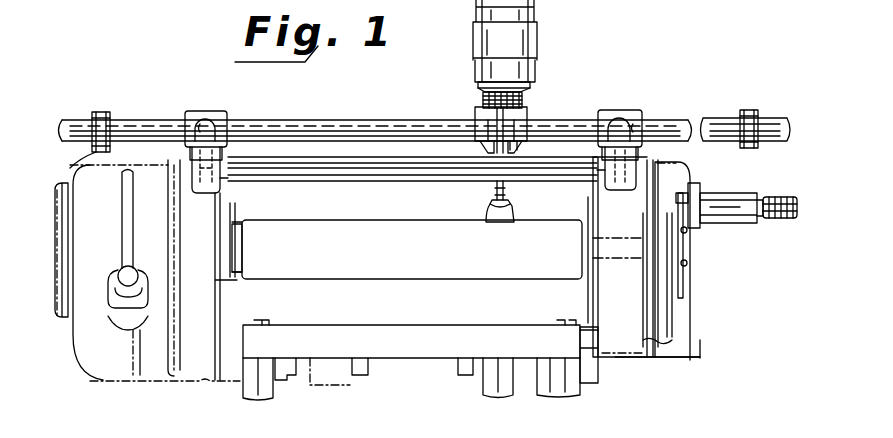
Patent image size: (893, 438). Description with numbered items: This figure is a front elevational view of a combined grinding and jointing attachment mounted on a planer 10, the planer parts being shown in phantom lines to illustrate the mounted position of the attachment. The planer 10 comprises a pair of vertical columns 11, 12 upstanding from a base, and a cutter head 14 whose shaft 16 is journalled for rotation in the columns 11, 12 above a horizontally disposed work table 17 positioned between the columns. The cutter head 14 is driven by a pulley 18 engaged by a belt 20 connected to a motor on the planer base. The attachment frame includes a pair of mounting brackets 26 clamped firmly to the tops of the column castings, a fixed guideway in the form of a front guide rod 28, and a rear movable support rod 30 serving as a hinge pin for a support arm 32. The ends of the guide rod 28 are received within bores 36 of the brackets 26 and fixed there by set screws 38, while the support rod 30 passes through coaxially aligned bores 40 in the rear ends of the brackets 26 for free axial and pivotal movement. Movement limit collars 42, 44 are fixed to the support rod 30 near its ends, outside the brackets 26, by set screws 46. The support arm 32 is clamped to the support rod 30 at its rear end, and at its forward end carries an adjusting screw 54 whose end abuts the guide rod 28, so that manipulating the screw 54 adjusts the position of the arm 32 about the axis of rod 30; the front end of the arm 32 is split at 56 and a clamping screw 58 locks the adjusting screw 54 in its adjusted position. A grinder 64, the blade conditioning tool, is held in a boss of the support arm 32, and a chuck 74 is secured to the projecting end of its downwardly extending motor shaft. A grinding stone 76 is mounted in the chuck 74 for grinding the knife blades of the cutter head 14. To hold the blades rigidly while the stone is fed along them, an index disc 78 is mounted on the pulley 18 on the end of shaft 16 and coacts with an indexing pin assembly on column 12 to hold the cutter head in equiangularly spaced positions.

The planer 10 is at (202, 389).
The vertical column 11 is at (248, 311).
The vertical column 12 is at (574, 302).
The cutter head 14 is at (352, 278).
The shaft 16 is at (612, 238).
The work table 17 is at (447, 320).
The pulley 18 is at (645, 273).
The belt 20 is at (675, 323).
The mounting brackets 26 is at (211, 100).
The guide rod 28 is at (365, 181).
The support rod 30 is at (380, 121).
The support arm 32 is at (533, 99).
The bores 36 is at (222, 186).
The set screws 38 is at (198, 170).
The bores 40 is at (190, 124).
The movement limit collar 42 is at (80, 158).
The movement limit collar 44 is at (750, 148).
The set screws 46 is at (107, 114).
The adjusting screw 54 is at (482, 98).
The split 56 is at (520, 130).
The clamping screw 58 is at (478, 125).
The grinder 64 is at (557, 33).
The chuck 74 is at (495, 194).
The grinding stone 76 is at (492, 220).
The index disc 78 is at (686, 290).